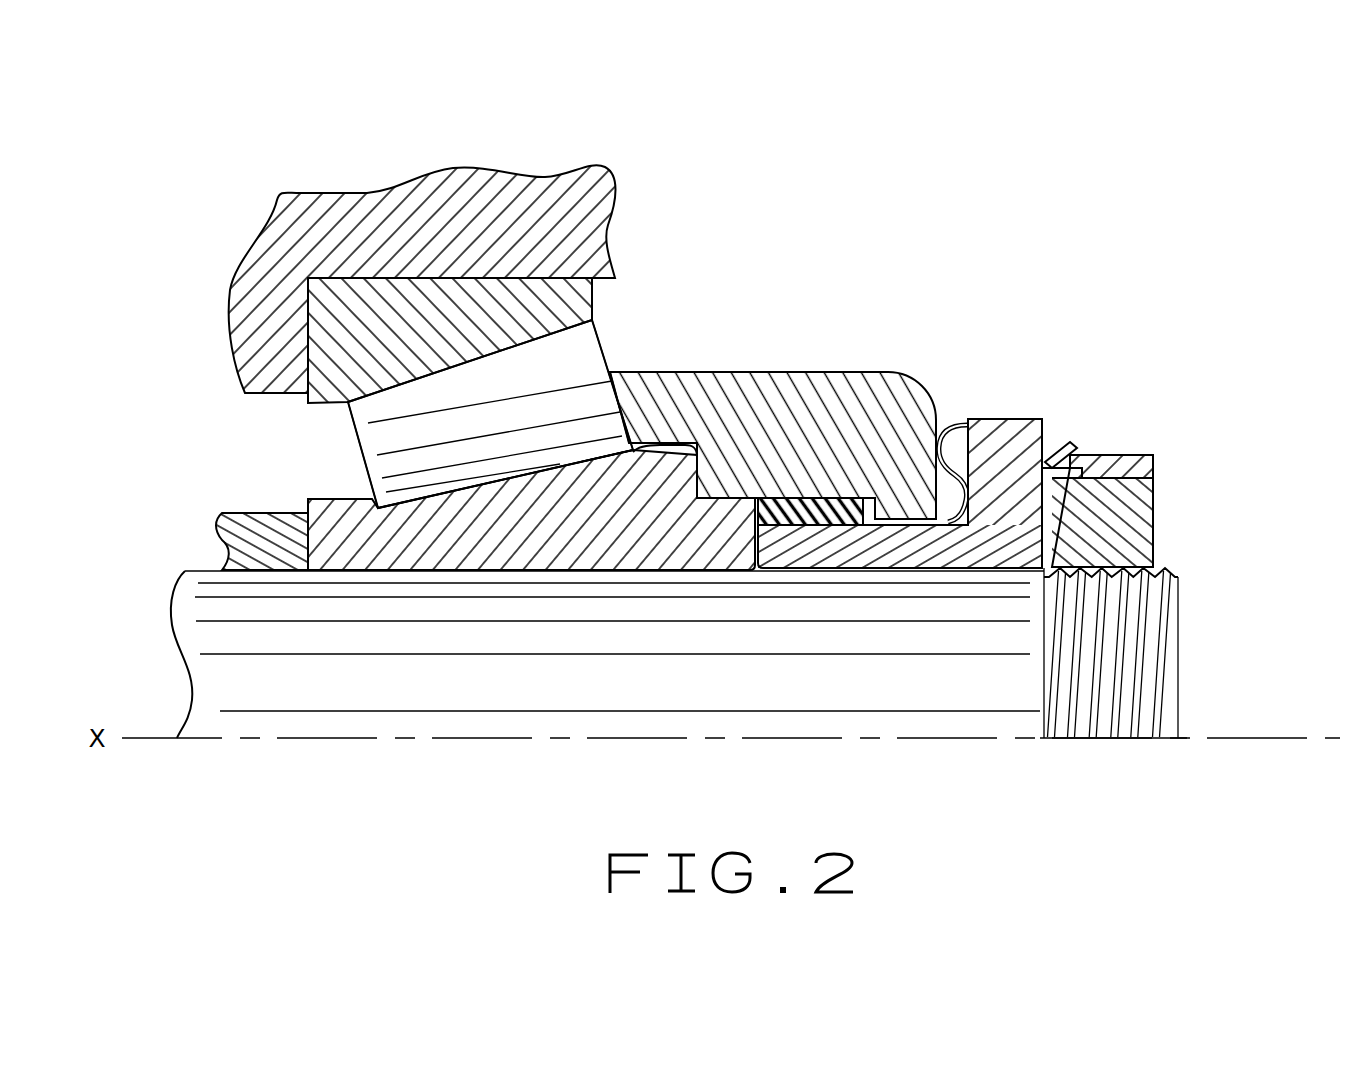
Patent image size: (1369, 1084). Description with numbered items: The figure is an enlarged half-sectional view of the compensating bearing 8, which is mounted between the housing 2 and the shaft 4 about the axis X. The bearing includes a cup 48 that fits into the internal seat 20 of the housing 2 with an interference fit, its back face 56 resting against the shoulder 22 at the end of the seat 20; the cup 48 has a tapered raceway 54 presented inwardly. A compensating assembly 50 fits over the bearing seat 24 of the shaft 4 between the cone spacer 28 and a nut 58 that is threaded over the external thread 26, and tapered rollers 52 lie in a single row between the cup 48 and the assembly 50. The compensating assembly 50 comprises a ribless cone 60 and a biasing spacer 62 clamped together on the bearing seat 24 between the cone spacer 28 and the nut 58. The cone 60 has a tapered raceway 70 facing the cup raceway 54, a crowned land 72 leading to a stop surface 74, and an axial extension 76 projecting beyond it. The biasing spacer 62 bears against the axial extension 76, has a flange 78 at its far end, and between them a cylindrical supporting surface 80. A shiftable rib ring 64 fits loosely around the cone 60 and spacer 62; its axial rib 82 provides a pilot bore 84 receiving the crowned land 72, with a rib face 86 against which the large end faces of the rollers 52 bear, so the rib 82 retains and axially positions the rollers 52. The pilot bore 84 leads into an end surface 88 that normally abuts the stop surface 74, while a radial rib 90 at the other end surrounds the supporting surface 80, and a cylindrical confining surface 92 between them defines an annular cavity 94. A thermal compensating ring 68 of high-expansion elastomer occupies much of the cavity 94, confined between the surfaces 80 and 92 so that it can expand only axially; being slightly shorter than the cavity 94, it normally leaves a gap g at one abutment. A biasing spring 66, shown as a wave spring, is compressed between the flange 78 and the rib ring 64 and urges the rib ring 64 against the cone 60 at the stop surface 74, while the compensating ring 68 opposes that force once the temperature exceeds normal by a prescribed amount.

The housing 2 is at (493, 188).
The shaft 4 is at (250, 718).
The compensating bearing 8 is at (768, 240).
The internal seat 20 is at (551, 283).
The shoulder 22 is at (325, 332).
The bearing seat 24 is at (503, 700).
The external thread 26 is at (1110, 713).
The cone spacer 28 is at (217, 538).
The cup 48 is at (422, 308).
The compensating assembly 50 is at (1048, 428).
The tapered rollers 52 is at (357, 446).
The tapered raceway 54 is at (398, 398).
The back face 56 is at (303, 352).
The nut 58 is at (1128, 507).
The ribless cone 60 is at (430, 553).
The biasing spacer 62 is at (965, 553).
The shiftable rib ring 64 is at (833, 397).
The biasing spring 66 is at (967, 424).
The thermal compensating ring 68 is at (842, 507).
The tapered raceway 70 is at (410, 490).
The crowned land 72 is at (673, 447).
The stop surface 74 is at (697, 487).
The axial extension 76 is at (724, 520).
The flange 78 is at (1006, 432).
The cylindrical supporting surface 80 is at (835, 497).
The axial rib 82 is at (675, 390).
The pilot bore 84 is at (650, 453).
The rib face 86 is at (585, 368).
The end surface 88 is at (690, 473).
The radial rib 90 is at (910, 519).
The cylindrical confining surface 92 is at (813, 505).
The annular cavity 94 is at (905, 497).
The gap g is at (867, 527).